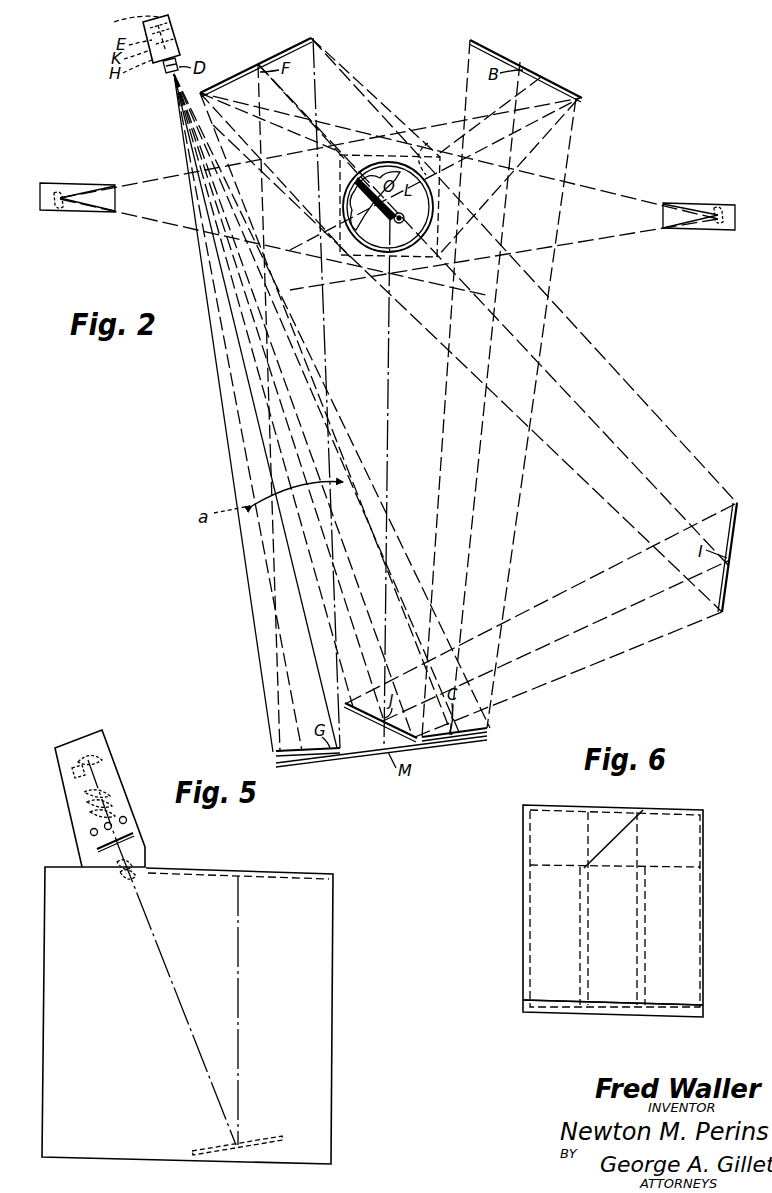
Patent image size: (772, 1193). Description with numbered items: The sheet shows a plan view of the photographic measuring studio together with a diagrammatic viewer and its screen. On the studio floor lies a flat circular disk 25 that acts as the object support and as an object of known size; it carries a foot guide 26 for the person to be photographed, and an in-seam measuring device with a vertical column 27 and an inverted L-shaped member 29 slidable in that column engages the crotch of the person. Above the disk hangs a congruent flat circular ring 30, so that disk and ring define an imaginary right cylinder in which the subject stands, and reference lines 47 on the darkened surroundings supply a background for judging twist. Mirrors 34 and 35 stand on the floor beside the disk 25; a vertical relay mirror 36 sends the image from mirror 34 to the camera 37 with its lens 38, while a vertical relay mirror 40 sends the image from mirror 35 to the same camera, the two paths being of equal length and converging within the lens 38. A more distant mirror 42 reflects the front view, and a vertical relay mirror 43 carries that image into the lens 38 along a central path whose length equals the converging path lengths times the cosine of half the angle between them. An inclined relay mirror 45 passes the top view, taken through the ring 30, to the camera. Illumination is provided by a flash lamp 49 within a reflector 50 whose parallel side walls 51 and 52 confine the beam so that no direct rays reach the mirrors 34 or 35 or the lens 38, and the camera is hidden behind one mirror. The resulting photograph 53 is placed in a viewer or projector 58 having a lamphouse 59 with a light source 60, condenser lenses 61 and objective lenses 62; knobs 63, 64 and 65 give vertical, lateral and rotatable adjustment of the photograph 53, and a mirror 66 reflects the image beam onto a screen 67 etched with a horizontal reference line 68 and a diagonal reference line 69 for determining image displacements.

In FIG. 2, the flat circular disk 25 is at (420, 200).
In FIG. 2, the foot guide 26 is at (362, 184).
In FIG. 2, the vertical column 27 is at (402, 226).
In FIG. 2, the inverted L-shaped member 29 is at (386, 222).
In FIG. 2, the flat circular ring 30 is at (432, 238).
In FIG. 2, the mirror 34 is at (525, 71).
In FIG. 2, the mirror 35 is at (272, 57).
In FIG. 2, the vertical relay mirror 36 is at (487, 729).
In FIG. 2, the camera 37 is at (173, 31).
In FIG. 2, the lens 38 is at (166, 73).
In FIG. 2, the vertical relay mirror 40 is at (278, 752).
In FIG. 2, the mirror 42 is at (725, 578).
In FIG. 2, the vertical relay mirror 43 is at (384, 746).
In FIG. 2, the inclined relay mirror 45 is at (372, 768).
In FIG. 2, the reference lines 47 is at (435, 152).
In FIG. 2, the flash lamp 49 is at (60, 210).
In FIG. 2, the reflector 50 is at (40, 195).
In FIG. 2, the side wall 51 is at (103, 184).
In FIG. 2, the side wall 52 is at (88, 212).
In FIG. 2, the photograph 53 is at (125, 23).
In FIG. 5, the photograph 53 is at (96, 849).
In FIG. 5, the viewer or projector 58 is at (44, 964).
In FIG. 5, the lamphouse 59 is at (75, 738).
In FIG. 5, the light source 60 is at (100, 760).
In FIG. 5, the condenser lenses 61 is at (78, 795).
In FIG. 5, the objective lenses 62 is at (118, 876).
In FIG. 5, the knob 63 is at (104, 826).
In FIG. 5, the knob 64 is at (90, 833).
In FIG. 5, the knob 65 is at (126, 818).
In FIG. 5, the mirror 66 is at (262, 1140).
In FIG. 5, the screen 67 is at (268, 880).
In FIG. 6, the screen 67 is at (523, 878).
In FIG. 6, the horizontal reference line 68 is at (608, 1005).
In FIG. 6, the diagonal reference line 69 is at (610, 840).